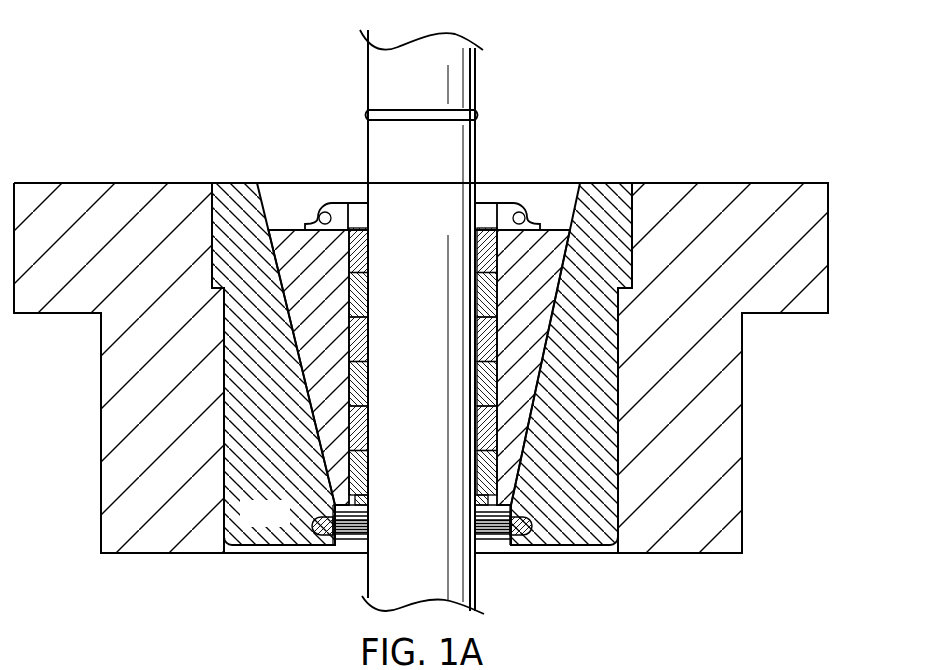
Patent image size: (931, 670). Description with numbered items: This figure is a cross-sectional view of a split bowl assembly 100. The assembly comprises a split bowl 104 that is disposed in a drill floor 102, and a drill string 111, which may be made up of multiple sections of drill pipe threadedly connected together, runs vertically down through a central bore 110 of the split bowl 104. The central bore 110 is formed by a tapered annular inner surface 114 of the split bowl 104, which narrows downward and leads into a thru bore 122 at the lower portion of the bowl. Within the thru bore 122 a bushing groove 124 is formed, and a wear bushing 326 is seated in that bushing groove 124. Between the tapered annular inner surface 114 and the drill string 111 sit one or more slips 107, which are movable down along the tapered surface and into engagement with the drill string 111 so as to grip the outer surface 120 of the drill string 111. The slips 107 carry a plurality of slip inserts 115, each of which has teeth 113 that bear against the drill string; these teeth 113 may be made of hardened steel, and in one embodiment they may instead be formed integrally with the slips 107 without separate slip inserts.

The split bowl assembly 100 is at (712, 58).
The drill floor 102 is at (772, 183).
The split bowl 104 is at (613, 205).
The slips 107 is at (541, 247).
The central bore 110 is at (317, 193).
The drill string 111 is at (437, 164).
The teeth 113 is at (470, 257).
The tapered annular inner surface 114 is at (272, 210).
The slip inserts 115 is at (484, 226).
The outer surface of the drill string 120 is at (368, 165).
The thru bore 122 is at (310, 506).
The bushing groove 124 is at (333, 500).
The wear bushing 326 is at (527, 536).